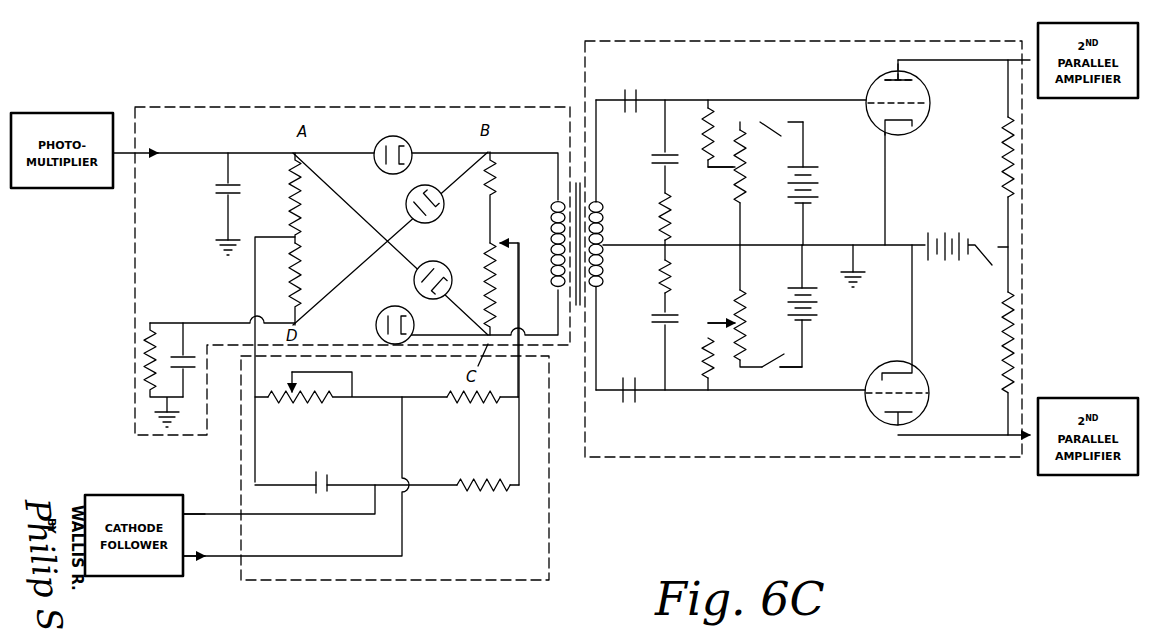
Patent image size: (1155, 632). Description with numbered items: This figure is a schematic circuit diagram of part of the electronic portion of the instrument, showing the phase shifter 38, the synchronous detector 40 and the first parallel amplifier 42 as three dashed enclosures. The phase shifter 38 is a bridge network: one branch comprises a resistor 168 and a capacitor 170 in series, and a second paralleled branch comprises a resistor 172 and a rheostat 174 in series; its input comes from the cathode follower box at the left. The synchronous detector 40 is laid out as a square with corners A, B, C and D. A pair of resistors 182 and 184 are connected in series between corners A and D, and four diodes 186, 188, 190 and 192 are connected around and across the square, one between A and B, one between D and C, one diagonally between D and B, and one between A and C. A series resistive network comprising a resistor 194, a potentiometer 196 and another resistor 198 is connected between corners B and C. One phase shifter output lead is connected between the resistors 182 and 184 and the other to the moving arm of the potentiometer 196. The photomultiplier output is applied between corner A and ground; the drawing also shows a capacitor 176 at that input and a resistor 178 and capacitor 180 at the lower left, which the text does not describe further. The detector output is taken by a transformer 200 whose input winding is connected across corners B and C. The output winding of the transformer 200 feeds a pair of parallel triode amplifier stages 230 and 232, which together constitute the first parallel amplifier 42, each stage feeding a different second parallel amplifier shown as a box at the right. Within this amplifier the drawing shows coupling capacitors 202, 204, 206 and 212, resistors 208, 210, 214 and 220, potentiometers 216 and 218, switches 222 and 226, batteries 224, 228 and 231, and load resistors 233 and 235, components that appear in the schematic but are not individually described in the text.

The phase shifter 38 is at (440, 580).
The synchronous detector 40 is at (338, 107).
The first parallel amplifier 42 is at (782, 457).
The resistor 168 is at (486, 489).
The capacitor 170 is at (330, 476).
The resistor 172 is at (478, 395).
The rheostat 174 is at (298, 402).
The capacitor 176 is at (212, 188).
The resistor 178 is at (144, 347).
The capacitor 180 is at (187, 353).
The resistor 182 is at (292, 190).
The resistor 184 is at (289, 272).
The diode 186 is at (404, 140).
The diode 188 is at (408, 203).
The diode 190 is at (447, 263).
The diode 192 is at (404, 295).
The resistor 194 is at (504, 179).
The potentiometer 196 is at (505, 217).
The resistor 198 is at (500, 313).
The transformer 200 is at (556, 193).
The capacitor 202 is at (650, 80).
The capacitor 204 is at (638, 398).
The capacitor 206 is at (650, 166).
The resistor 208 is at (658, 214).
The resistor 210 is at (658, 278).
The capacitor 212 is at (651, 323).
The resistor 214 is at (712, 124).
The potentiometer 216 is at (734, 176).
The potentiometer 218 is at (734, 300).
The resistor 220 is at (714, 378).
The switch 222 is at (768, 120).
The battery 224 is at (822, 198).
The switch 226 is at (782, 370).
The battery 228 is at (820, 305).
The triode amplifier stage 230 is at (985, 112).
The battery 231 is at (950, 222).
The triode amplifier stage 232 is at (983, 407).
The resistor 233 is at (1012, 170).
The resistor 235 is at (1012, 358).